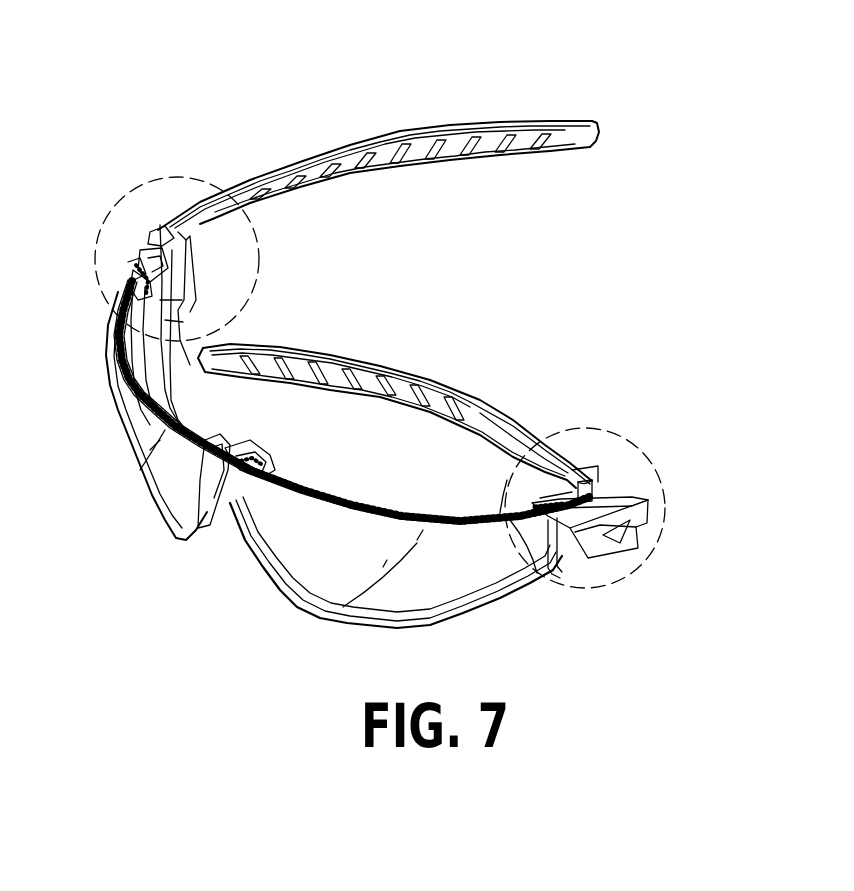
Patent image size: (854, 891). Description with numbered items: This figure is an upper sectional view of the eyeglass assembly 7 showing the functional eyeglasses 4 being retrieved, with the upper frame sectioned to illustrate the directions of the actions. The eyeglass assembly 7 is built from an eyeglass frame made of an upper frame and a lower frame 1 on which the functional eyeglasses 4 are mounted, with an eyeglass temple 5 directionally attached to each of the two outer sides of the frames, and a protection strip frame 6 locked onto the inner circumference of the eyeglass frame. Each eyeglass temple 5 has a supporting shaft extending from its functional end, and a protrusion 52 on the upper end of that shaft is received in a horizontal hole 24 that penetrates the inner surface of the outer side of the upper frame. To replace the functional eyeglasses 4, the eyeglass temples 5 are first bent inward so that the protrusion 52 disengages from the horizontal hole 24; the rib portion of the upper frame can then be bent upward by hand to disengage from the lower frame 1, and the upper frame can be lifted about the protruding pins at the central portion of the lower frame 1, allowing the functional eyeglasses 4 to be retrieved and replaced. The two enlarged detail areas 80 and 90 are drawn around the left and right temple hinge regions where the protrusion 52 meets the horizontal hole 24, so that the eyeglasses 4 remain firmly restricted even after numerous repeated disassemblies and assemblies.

The eyeglass assembly 7 is at (282, 113).
The eyeglass temple 5 is at (394, 128).
The protrusion 52 is at (150, 237).
The detail circle (left hinge) 80 is at (177, 230).
The detail circle (right hinge) 90 is at (585, 479).
The protection strip frame 6 is at (167, 330).
The functional eyeglasses 4 is at (130, 410).
The horizontal hole 24 is at (592, 480).
The lower frame 1 is at (168, 523).